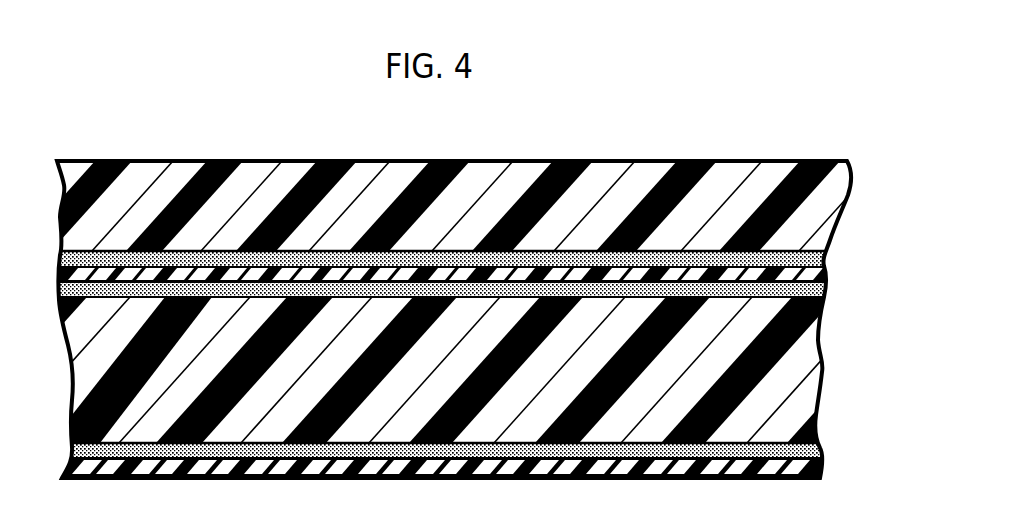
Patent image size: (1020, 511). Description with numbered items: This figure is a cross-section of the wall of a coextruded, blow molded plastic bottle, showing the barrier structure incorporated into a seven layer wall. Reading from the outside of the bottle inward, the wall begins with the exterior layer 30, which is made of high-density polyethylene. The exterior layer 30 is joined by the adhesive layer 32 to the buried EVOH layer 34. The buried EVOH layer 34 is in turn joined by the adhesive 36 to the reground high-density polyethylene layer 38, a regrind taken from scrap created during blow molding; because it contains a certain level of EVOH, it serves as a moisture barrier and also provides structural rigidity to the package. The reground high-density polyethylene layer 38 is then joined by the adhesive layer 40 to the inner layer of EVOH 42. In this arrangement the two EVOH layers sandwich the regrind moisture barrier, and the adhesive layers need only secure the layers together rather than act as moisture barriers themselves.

The exterior layer 30 is at (821, 198).
The adhesive layer 32 is at (830, 250).
The buried EVOH layer 34 is at (828, 273).
The adhesive 36 is at (825, 290).
The reground high-density polyethylene layer 38 is at (803, 367).
The adhesive layer 40 is at (817, 447).
The inner layer of EVOH 42 is at (823, 468).